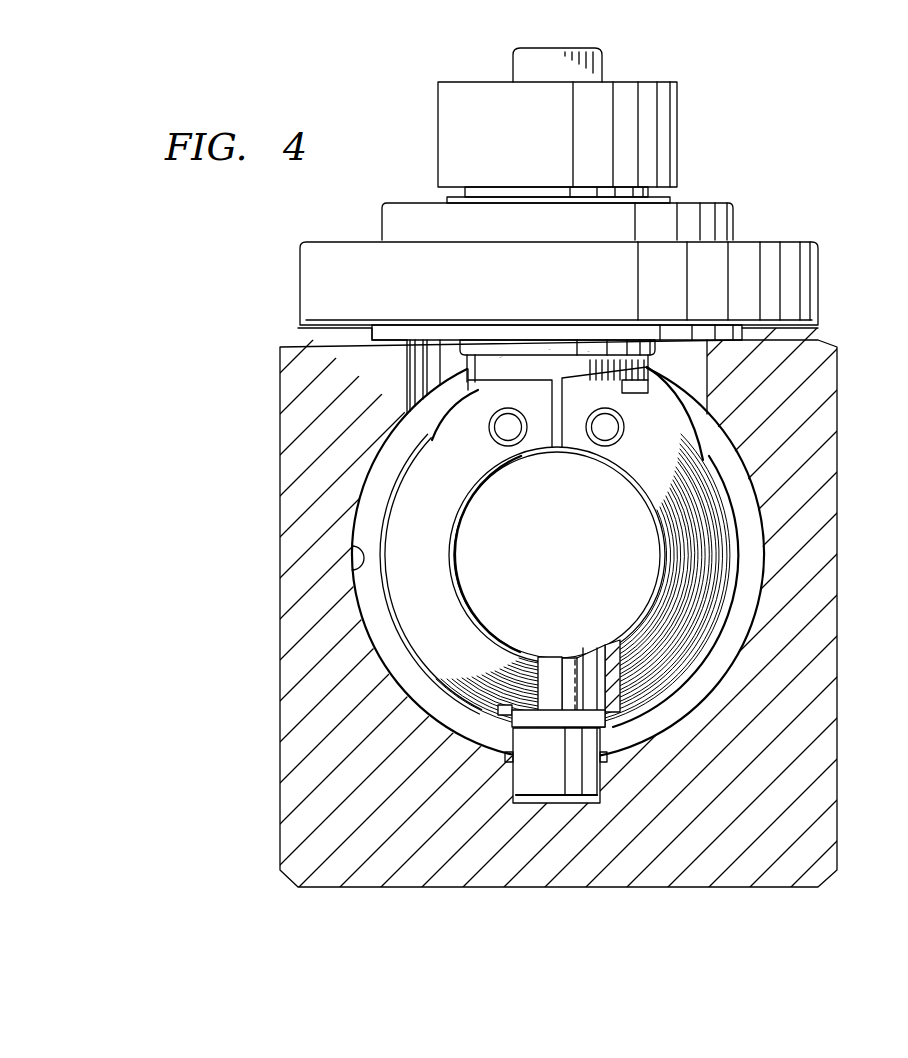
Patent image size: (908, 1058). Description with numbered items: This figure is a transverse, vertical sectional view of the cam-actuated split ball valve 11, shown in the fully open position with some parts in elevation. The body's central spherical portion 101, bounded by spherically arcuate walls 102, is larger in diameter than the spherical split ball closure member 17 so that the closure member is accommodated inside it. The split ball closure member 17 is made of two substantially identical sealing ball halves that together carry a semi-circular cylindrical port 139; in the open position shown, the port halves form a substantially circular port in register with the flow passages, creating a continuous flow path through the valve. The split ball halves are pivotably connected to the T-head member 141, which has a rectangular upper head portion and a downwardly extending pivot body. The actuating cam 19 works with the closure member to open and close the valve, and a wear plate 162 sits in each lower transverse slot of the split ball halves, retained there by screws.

The cam-actuated split ball valve 11 is at (241, 294).
The central spherical portion 101 is at (355, 558).
The spherically arcuate walls 102 is at (372, 497).
The T-head member 141 is at (479, 372).
The split ball closure member 17 is at (443, 582).
The semi-circular cylindrical port 139 is at (458, 553).
The actuating cam 19 is at (550, 659).
The wear plate 162 is at (600, 644).